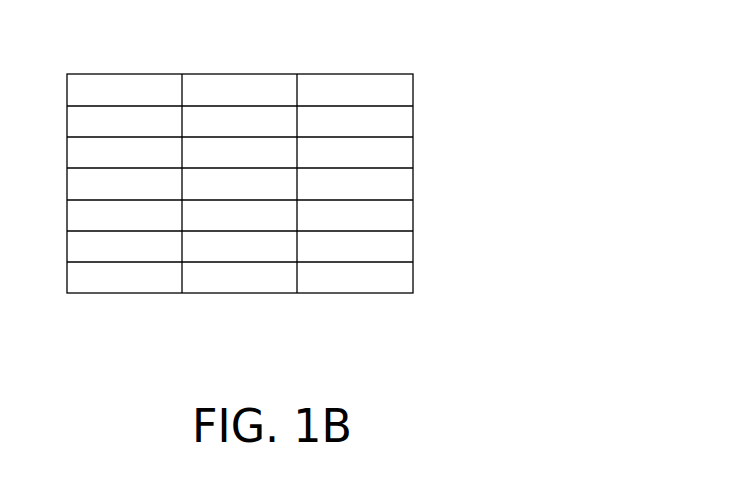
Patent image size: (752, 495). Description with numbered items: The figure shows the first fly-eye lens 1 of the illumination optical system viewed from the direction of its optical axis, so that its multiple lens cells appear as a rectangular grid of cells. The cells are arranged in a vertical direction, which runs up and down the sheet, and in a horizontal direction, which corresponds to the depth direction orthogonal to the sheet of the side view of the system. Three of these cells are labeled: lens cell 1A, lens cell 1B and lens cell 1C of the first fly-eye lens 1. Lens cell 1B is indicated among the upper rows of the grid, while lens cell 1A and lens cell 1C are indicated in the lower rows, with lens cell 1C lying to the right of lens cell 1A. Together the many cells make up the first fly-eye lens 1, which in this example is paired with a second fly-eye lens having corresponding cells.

The first fly-eye lens 1 is at (370, 74).
The lens cell 1A is at (136, 178).
The lens cell 1B is at (225, 150).
The lens cell 1C is at (263, 217).